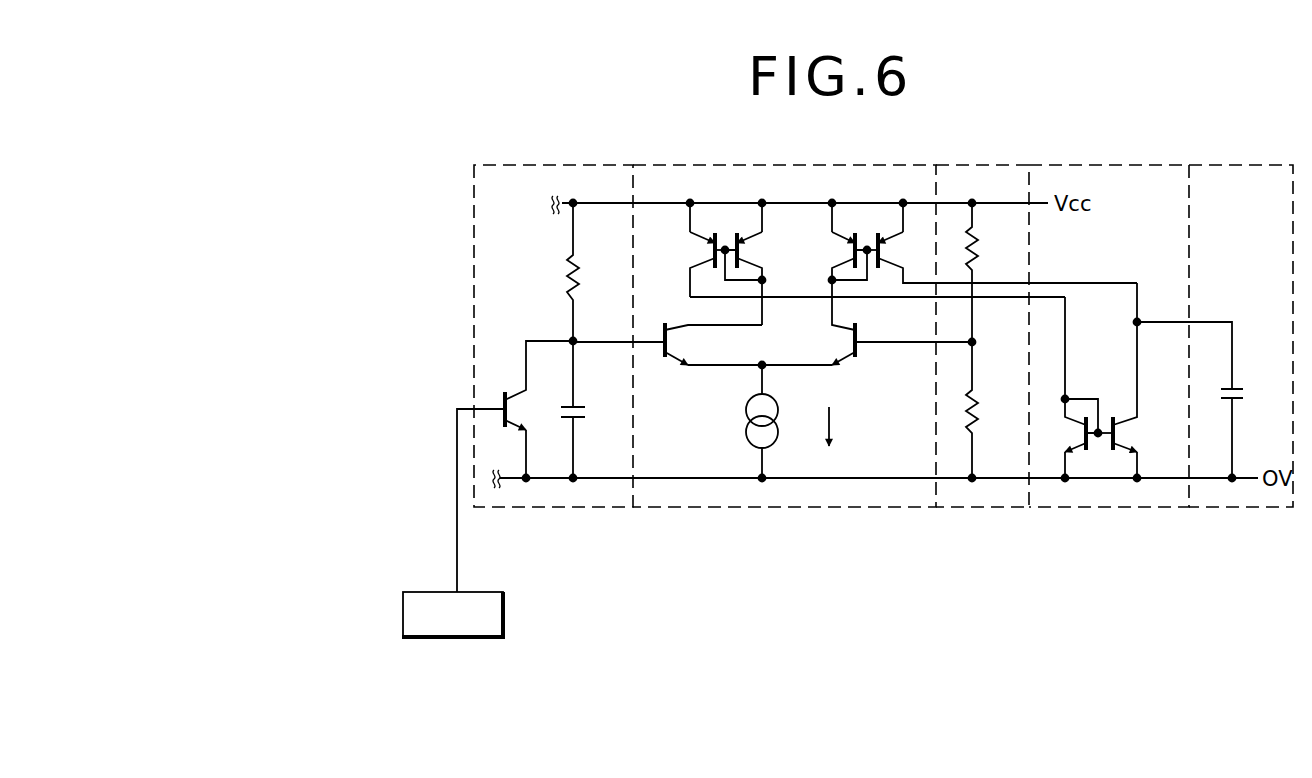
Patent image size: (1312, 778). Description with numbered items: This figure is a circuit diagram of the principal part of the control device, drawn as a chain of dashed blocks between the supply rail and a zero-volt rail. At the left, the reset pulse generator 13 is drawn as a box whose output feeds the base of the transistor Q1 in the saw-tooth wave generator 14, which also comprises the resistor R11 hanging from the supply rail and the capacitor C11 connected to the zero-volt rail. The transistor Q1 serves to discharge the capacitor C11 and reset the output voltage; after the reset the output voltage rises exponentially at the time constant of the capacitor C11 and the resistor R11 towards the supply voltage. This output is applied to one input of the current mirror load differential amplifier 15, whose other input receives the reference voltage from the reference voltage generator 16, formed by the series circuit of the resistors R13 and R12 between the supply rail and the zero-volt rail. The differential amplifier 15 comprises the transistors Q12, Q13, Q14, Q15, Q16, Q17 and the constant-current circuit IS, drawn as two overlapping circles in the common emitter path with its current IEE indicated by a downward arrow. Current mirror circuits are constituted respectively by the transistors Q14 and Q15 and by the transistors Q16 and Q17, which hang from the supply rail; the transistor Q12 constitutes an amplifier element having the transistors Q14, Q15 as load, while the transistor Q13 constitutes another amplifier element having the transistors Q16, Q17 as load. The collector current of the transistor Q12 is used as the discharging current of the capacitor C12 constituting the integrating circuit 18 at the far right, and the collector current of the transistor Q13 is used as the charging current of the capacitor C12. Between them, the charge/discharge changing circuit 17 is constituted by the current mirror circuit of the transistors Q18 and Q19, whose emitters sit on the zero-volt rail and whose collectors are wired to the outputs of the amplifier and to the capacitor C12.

The reset pulse generator 13 is at (504, 612).
The saw-tooth wave generator 14 is at (545, 378).
The current mirror load differential amplifier 15 is at (855, 363).
The reference voltage generator 16 is at (979, 363).
The charge/discharge changing circuit 17 is at (1109, 363).
The integrating circuit 18 is at (1215, 363).
The transistor Q1 is at (514, 400).
The resistor R11 is at (604, 268).
The capacitor C11 is at (578, 410).
The transistor Q12 is at (672, 370).
The transistor Q13 is at (856, 360).
The transistor Q14 is at (708, 253).
The transistor Q15 is at (748, 250).
The transistor Q16 is at (842, 248).
The transistor Q17 is at (885, 252).
The constant-current circuit IS is at (780, 426).
The emitter current IEE is at (848, 426).
The resistor R13 is at (978, 251).
The resistor R12 is at (992, 410).
The transistor Q18 is at (1083, 433).
The transistor Q19 is at (1118, 432).
The capacitor C12 is at (1209, 402).